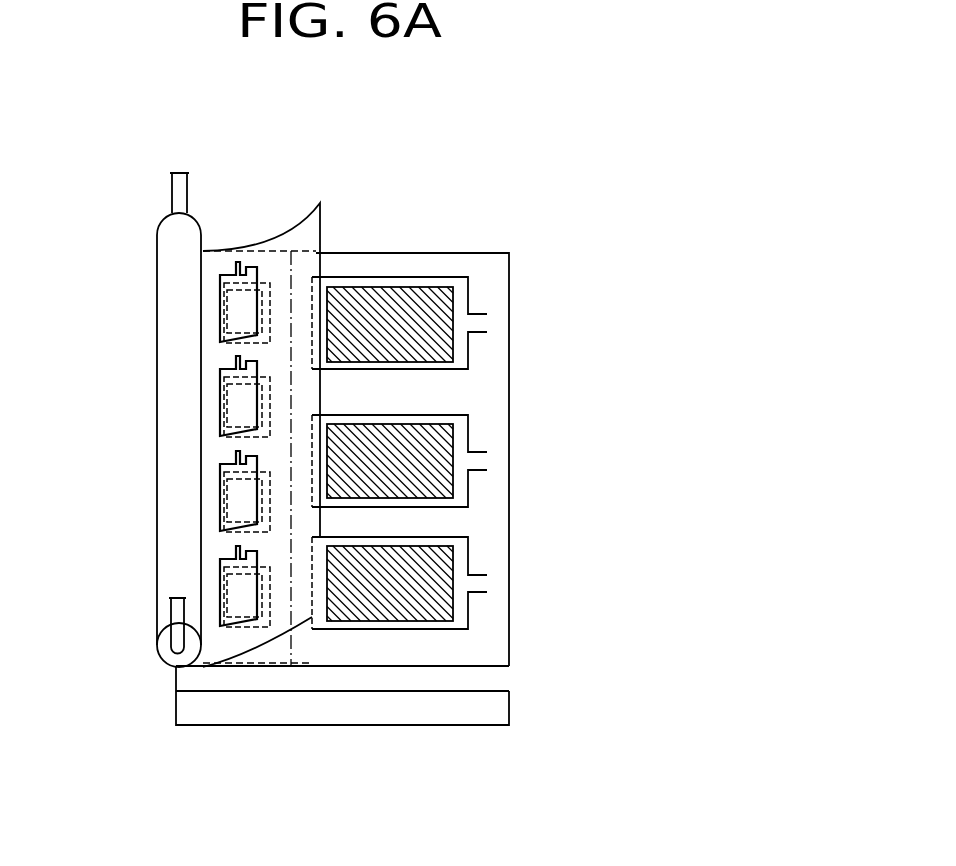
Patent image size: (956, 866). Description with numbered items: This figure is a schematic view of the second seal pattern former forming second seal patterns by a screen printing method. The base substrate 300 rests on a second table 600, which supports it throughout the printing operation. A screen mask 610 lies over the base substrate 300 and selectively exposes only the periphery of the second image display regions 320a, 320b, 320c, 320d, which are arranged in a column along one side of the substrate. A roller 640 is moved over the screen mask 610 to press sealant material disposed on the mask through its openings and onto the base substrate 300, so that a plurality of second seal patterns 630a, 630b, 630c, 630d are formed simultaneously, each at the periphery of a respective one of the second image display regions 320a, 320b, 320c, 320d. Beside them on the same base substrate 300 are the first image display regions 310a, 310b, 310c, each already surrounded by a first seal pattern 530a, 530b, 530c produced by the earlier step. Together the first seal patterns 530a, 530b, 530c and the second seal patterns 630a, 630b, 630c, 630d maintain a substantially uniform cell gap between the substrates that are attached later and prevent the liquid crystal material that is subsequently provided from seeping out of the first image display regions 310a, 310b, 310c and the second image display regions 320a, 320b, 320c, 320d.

The base substrate 300 is at (429, 685).
The second table 600 is at (315, 714).
The roller 640 is at (167, 247).
The screen mask 610 is at (300, 229).
The second image display region 320a is at (222, 291).
The second image display region 320b is at (222, 384).
The second image display region 320c is at (222, 481).
The second image display region 320d is at (222, 579).
The second seal pattern 630a is at (222, 316).
The second seal pattern 630b is at (222, 420).
The second seal pattern 630c is at (222, 521).
The second seal pattern 630d is at (222, 602).
The first seal pattern 530a is at (470, 290).
The first seal pattern 530b is at (470, 427).
The first seal pattern 530c is at (470, 548).
The first image display region 310a is at (453, 348).
The first image display region 310b is at (453, 488).
The first image display region 310c is at (453, 612).